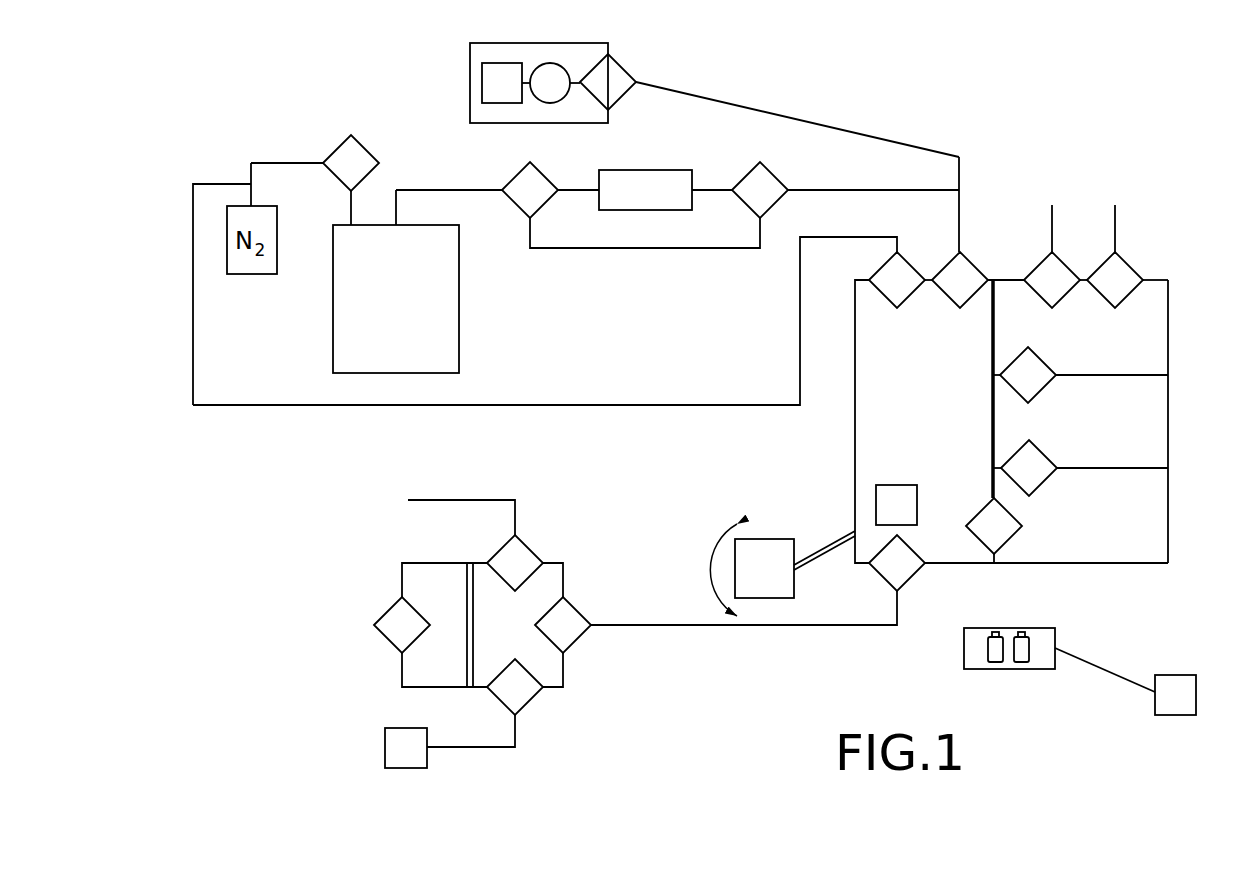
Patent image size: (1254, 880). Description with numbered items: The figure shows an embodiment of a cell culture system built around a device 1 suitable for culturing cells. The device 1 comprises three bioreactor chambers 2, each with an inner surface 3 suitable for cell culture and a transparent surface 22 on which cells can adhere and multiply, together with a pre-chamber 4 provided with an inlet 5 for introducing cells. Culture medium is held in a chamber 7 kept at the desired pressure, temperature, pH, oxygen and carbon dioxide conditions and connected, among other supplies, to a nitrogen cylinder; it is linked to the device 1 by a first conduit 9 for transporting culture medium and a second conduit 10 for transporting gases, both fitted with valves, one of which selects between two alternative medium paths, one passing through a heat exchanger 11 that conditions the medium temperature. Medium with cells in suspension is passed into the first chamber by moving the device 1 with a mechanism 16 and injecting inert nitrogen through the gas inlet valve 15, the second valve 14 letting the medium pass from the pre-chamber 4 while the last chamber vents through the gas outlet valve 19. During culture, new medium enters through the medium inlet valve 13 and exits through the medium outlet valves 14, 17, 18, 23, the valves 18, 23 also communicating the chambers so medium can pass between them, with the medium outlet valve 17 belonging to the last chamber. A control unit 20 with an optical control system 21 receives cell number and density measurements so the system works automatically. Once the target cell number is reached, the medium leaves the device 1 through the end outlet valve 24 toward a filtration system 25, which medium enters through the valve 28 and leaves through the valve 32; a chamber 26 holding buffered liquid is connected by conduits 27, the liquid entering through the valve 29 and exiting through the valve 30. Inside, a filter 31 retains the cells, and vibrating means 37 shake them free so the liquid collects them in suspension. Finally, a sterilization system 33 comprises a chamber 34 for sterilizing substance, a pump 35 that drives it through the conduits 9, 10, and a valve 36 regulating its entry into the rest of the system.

The device 1 is at (1189, 267).
The bioreactor chamber 2 is at (1093, 425).
The inner surface 3 is at (1080, 424).
The pre-chamber 4 is at (1011, 421).
The inlet 5 is at (896, 505).
The chamber for containing cell culture medium 7 is at (396, 299).
The first conduit 9 is at (677, 203).
The second conduit 10 is at (545, 321).
The heat exchanger 11 is at (645, 190).
The medium inlet valve 13 is at (960, 280).
The second valve 14 is at (994, 530).
The gas inlet valve 15 is at (897, 280).
The mechanism for moving the device 16 is at (782, 570).
The medium outlet valve 17 is at (1052, 256).
The valve 18 is at (1029, 468).
The gas outlet valve 19 is at (1115, 256).
The control unit 20 is at (1175, 695).
The optical control system 21 is at (1069, 637).
The transparent surface 22 is at (1150, 423).
The valve 23 is at (1028, 375).
The end outlet valve 24 is at (758, 580).
The filtration system 25 is at (583, 550).
The chamber for containing liquid medium 26 is at (406, 748).
The conduits 27 is at (471, 731).
The valve 28 is at (716, 625).
The valve 29 is at (515, 687).
The valve 30 is at (515, 563).
The filter 31 is at (453, 625).
The valve 32 is at (402, 625).
The sterilization system 33 is at (622, 40).
The chamber for containing sterilizing substance 34 is at (506, 83).
The pump 35 is at (555, 83).
The valve 36 is at (608, 82).
The vibrating means 37 is at (450, 625).